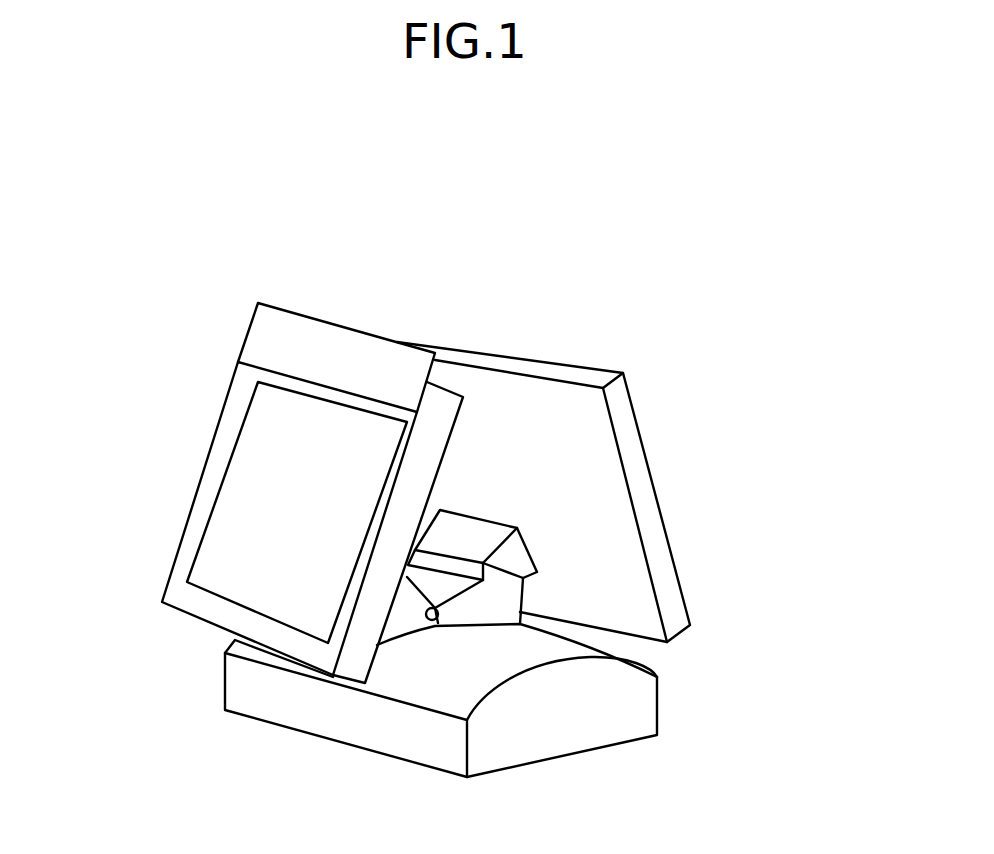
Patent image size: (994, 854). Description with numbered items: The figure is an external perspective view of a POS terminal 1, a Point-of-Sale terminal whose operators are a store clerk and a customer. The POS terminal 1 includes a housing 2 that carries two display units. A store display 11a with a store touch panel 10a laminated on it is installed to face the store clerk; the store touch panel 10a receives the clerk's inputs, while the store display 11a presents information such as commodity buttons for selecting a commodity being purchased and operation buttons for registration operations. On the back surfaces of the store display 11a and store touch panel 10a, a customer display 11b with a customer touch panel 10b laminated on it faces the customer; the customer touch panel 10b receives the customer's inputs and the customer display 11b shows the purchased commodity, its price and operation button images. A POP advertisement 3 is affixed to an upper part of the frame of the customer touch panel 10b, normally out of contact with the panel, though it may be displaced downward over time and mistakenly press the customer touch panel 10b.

The POS terminal 1 is at (826, 312).
The housing 2 is at (657, 708).
The POP advertisement 3 is at (260, 343).
The store display 11a is at (720, 396).
The store touch panel 10a is at (543, 492).
The customer display 11b is at (242, 492).
The customer touch panel 10b is at (312, 522).